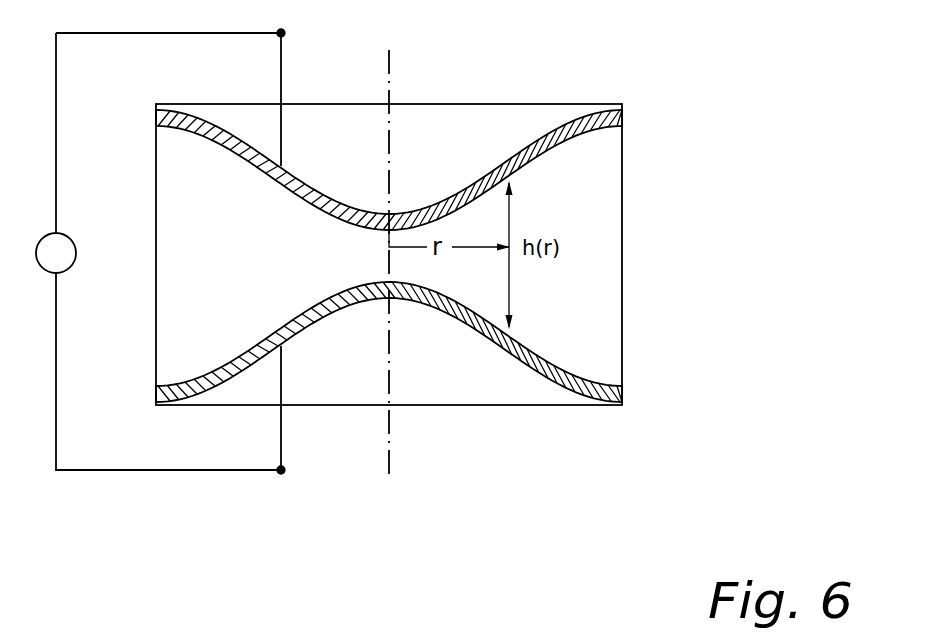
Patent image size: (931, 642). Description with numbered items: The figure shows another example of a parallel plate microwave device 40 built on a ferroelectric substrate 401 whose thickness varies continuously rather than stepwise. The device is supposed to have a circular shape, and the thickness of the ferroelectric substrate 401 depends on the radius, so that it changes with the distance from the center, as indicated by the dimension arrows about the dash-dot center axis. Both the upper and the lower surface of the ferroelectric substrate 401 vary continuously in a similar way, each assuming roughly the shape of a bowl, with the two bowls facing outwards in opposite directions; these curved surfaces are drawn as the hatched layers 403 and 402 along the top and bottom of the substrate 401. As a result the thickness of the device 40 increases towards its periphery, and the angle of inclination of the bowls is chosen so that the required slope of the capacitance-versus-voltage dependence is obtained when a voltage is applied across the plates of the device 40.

The parallel plate microwave device 40 is at (280, 520).
The ferroelectric substrate 401 is at (598, 249).
The lower electrode 402 is at (582, 405).
The upper electrode 403 is at (572, 118).